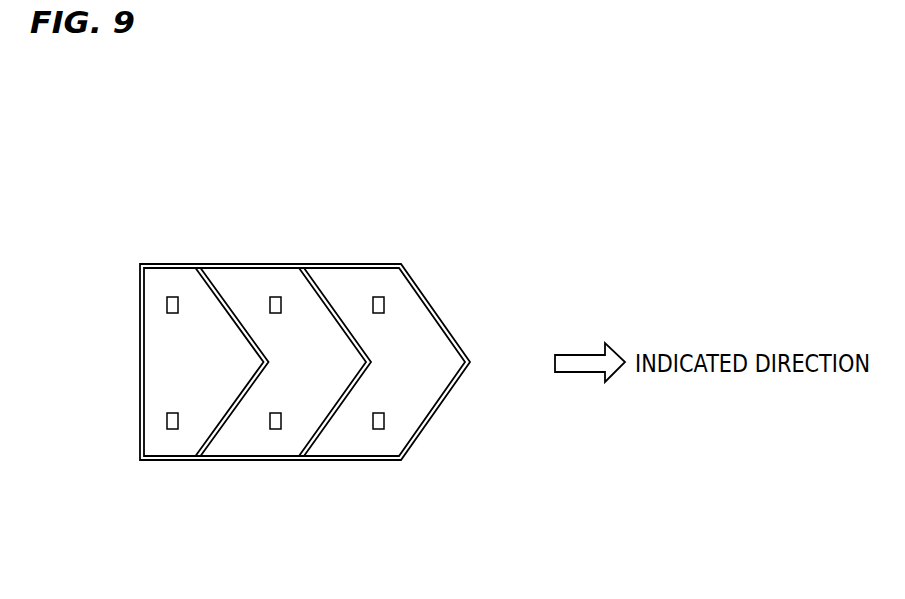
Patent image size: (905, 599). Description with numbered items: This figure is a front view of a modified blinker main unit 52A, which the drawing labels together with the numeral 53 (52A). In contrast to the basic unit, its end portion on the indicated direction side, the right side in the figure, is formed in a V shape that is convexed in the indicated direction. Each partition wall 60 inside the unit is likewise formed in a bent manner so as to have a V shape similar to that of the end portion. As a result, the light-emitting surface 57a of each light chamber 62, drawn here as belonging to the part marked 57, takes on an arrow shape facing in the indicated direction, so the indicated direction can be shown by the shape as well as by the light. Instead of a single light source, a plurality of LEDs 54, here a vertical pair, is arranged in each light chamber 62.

The display unit 53 is at (387, 362).
The blinker main unit 52A is at (472, 339).
The light guide plate 57 is at (299, 326).
The light-emitting surface 57a is at (271, 326).
The light chamber 62 is at (297, 404).
The partition wall 60 is at (218, 432).
The LED 54 is at (166, 303).